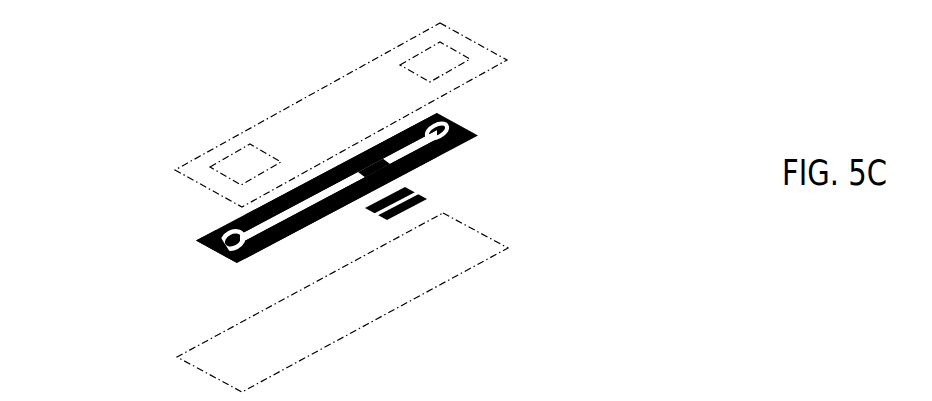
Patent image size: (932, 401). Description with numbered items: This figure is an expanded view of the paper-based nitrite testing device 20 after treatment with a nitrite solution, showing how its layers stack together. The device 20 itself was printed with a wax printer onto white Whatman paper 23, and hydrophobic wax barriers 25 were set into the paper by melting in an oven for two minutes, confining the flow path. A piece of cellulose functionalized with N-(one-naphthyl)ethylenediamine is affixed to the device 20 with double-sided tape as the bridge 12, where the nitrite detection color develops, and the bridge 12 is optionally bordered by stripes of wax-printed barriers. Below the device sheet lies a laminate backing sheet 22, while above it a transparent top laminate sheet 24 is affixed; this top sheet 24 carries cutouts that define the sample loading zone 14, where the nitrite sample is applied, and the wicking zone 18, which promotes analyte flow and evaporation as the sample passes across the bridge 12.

The cellulose bridge 12 is at (412, 198).
The sample loading zone 14 is at (470, 129).
The wicking zone 18 is at (217, 250).
The testing device 20 is at (168, 247).
The laminate backing sheet 22 is at (168, 344).
The Whatman #1 paper 23 is at (313, 201).
The transparent top laminate sheet 24 is at (186, 150).
The hydrophobic wax barriers 25 is at (264, 202).